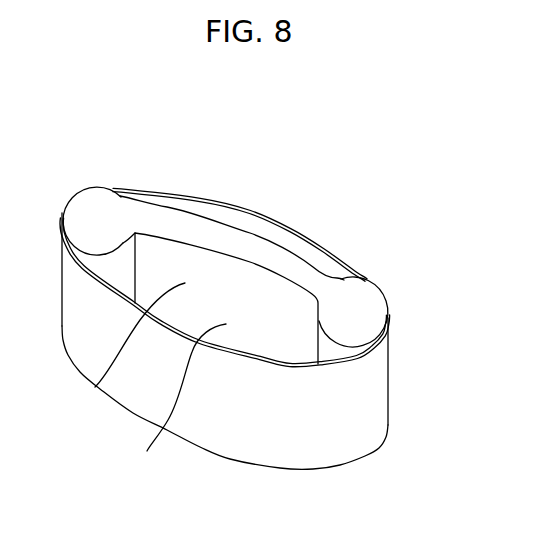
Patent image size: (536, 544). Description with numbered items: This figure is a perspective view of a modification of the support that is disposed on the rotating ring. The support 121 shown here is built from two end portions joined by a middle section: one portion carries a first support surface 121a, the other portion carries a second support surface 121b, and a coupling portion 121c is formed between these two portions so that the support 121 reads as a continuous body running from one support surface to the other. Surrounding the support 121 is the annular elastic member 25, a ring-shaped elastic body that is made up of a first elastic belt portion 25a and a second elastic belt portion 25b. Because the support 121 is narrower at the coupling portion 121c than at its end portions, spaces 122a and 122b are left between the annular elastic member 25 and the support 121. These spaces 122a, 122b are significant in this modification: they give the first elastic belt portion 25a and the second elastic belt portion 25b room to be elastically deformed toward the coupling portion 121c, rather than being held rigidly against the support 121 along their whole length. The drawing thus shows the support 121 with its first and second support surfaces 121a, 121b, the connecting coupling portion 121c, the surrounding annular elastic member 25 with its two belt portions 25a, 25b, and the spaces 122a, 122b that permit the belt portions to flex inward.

The annular elastic member 25 is at (395, 400).
The first elastic belt portion 25a is at (300, 231).
The second elastic belt portion 25b is at (213, 427).
The support 121 is at (206, 204).
The first support surface 121a is at (61, 212).
The second support surface 121b is at (379, 337).
The coupling portion 121c is at (95, 387).
The space 122a is at (263, 233).
The space 122b is at (147, 451).